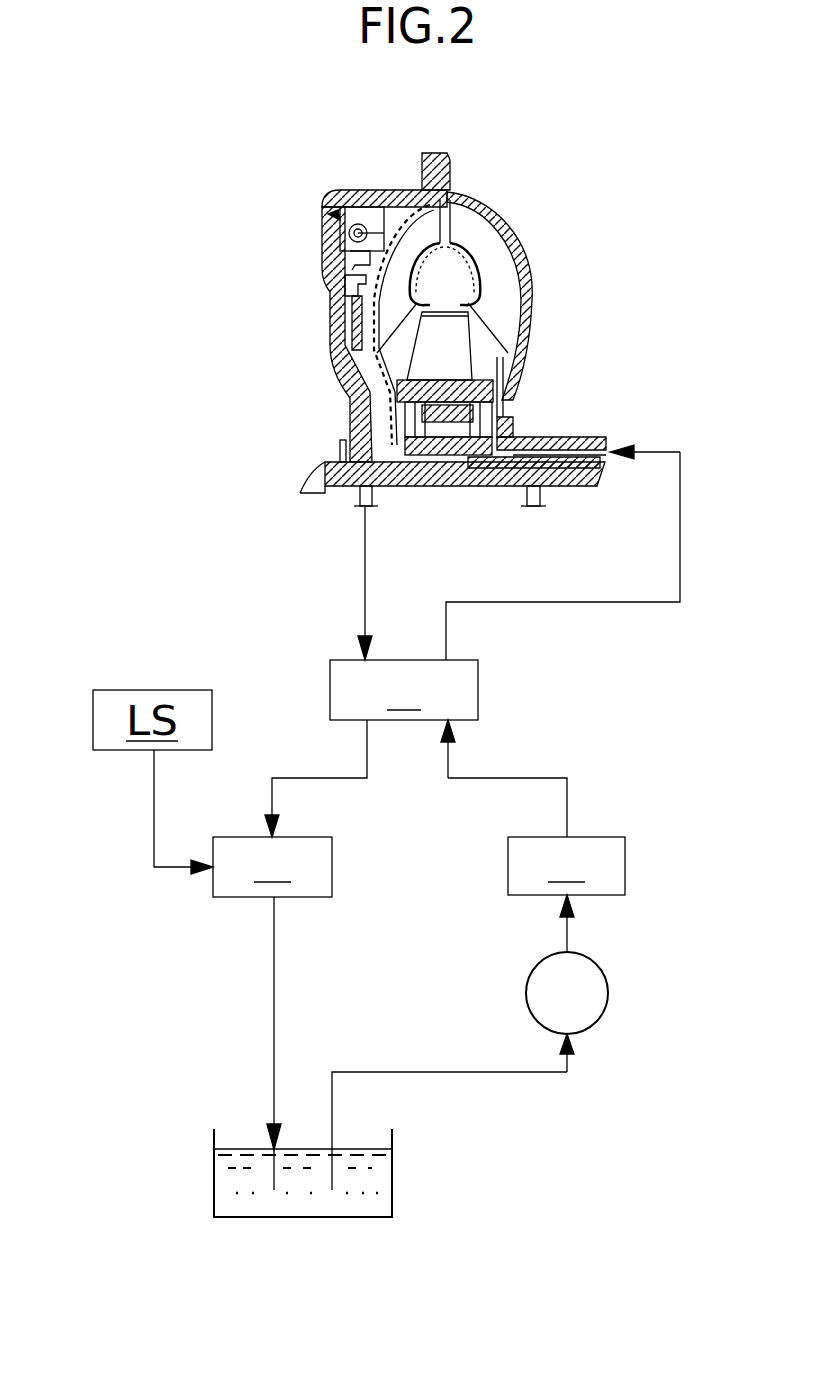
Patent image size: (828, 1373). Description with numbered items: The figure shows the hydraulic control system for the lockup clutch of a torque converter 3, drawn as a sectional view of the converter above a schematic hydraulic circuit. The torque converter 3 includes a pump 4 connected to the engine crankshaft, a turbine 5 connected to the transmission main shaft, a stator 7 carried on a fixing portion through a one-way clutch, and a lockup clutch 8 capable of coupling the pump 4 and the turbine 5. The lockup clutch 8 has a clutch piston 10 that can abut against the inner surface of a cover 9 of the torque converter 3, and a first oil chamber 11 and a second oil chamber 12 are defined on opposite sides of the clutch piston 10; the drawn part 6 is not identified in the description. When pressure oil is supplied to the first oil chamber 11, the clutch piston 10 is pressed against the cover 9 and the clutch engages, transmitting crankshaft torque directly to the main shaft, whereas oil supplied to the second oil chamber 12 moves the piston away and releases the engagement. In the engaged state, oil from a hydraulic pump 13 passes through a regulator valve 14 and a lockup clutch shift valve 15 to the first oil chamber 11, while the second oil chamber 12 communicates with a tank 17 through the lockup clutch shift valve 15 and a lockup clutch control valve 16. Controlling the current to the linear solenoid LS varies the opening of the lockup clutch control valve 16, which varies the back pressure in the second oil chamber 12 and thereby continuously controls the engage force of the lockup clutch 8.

The torque converter 3 is at (432, 307).
The pump 4 is at (502, 281).
The turbine 5 is at (412, 238).
The mounting sleeve 6 is at (455, 432).
The stator 7 is at (452, 357).
The lockup clutch 8 is at (328, 214).
The cover 9 is at (336, 350).
The clutch piston 10 is at (330, 292).
The first oil chamber 11 is at (343, 388).
The second oil chamber 12 is at (352, 318).
The hydraulic pump 13 is at (608, 993).
The regulator valve 14 is at (566, 865).
The lockup clutch shift valve 15 is at (404, 690).
The lockup clutch control valve 16 is at (272, 866).
The tank 17 is at (392, 1187).